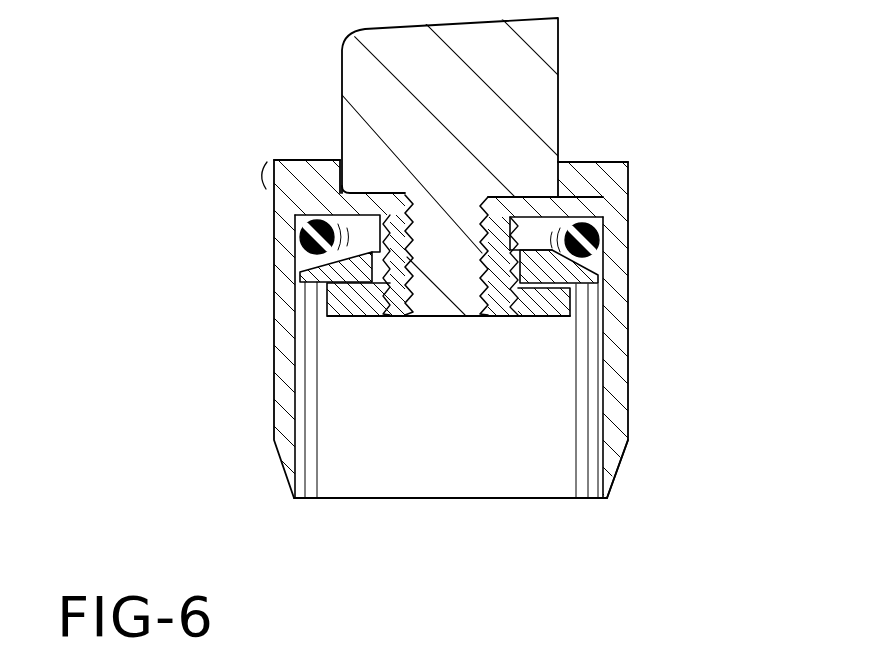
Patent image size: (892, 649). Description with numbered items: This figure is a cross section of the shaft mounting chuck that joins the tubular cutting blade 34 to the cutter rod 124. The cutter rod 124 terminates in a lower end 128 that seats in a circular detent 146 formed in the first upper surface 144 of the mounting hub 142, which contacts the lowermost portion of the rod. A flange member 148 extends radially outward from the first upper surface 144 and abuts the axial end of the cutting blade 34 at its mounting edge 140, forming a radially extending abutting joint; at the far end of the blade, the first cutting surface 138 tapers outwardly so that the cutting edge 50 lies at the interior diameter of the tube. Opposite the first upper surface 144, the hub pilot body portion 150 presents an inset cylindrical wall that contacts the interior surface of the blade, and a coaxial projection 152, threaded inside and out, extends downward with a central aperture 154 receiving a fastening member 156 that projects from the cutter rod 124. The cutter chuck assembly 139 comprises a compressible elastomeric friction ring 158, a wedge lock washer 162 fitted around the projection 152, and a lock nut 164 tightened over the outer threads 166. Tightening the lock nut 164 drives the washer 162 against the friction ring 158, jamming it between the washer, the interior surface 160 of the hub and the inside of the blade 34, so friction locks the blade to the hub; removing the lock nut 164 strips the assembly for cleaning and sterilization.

The cutter rod 124 is at (545, 41).
The lower end 128 is at (537, 183).
The circular detent 146 is at (340, 184).
The tubular cutting blade 34 is at (627, 368).
The mounting hub 142 is at (294, 160).
The flange member 148 is at (263, 185).
The first upper surface 144 is at (628, 162).
The mounting edge 140 is at (607, 195).
The interior surface 160 is at (296, 219).
The hub pilot body portion 150 is at (600, 228).
The friction ring 158 is at (298, 232).
The wedge lock washer 162 is at (600, 274).
The outer threads 166 is at (384, 272).
The lock nut 164 is at (571, 308).
The central aperture 154 is at (416, 318).
The projection 152 is at (498, 318).
The fastening member 156 is at (443, 318).
The cutter chuck assembly 139 is at (344, 320).
The first cutting surface 138 is at (622, 474).
The cutting edge 50 is at (400, 497).